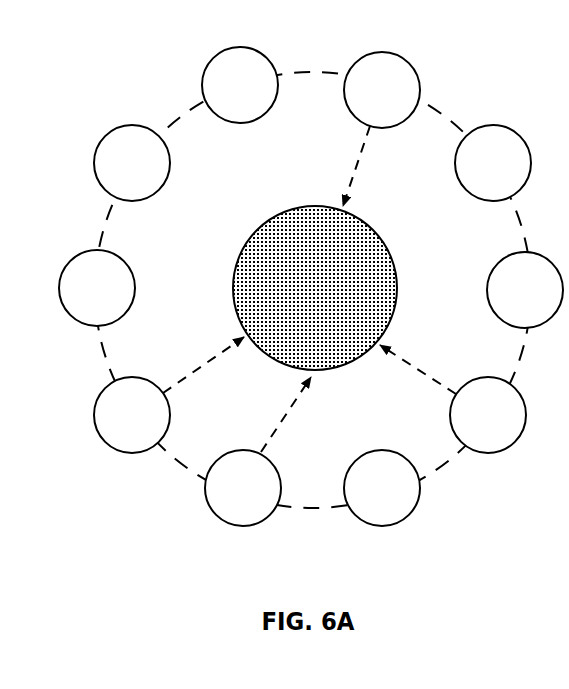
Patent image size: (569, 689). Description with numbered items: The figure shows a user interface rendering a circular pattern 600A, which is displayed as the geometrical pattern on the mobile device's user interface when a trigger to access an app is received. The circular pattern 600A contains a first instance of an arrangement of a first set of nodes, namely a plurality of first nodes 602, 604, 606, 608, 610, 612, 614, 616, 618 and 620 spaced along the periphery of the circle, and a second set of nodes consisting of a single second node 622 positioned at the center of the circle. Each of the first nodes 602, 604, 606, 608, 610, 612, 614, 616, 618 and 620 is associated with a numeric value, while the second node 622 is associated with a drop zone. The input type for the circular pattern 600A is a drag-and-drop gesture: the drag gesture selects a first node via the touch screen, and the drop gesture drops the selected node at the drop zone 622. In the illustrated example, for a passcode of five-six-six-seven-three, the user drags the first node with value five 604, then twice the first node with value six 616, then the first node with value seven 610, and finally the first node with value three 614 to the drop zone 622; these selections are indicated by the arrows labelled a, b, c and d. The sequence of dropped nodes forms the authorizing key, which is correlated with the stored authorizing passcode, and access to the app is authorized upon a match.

The circular pattern 600A is at (150, 62).
The first node 602 is at (222, 106).
The first node 604 is at (364, 111).
The first node 606 is at (475, 184).
The first node 608 is at (507, 311).
The first node 610 is at (470, 436).
The first node 612 is at (364, 509).
The first node 614 is at (225, 509).
The first node 616 is at (114, 436).
The first node 618 is at (79, 309).
The first node 620 is at (114, 184).
The second node 622 is at (297, 298).